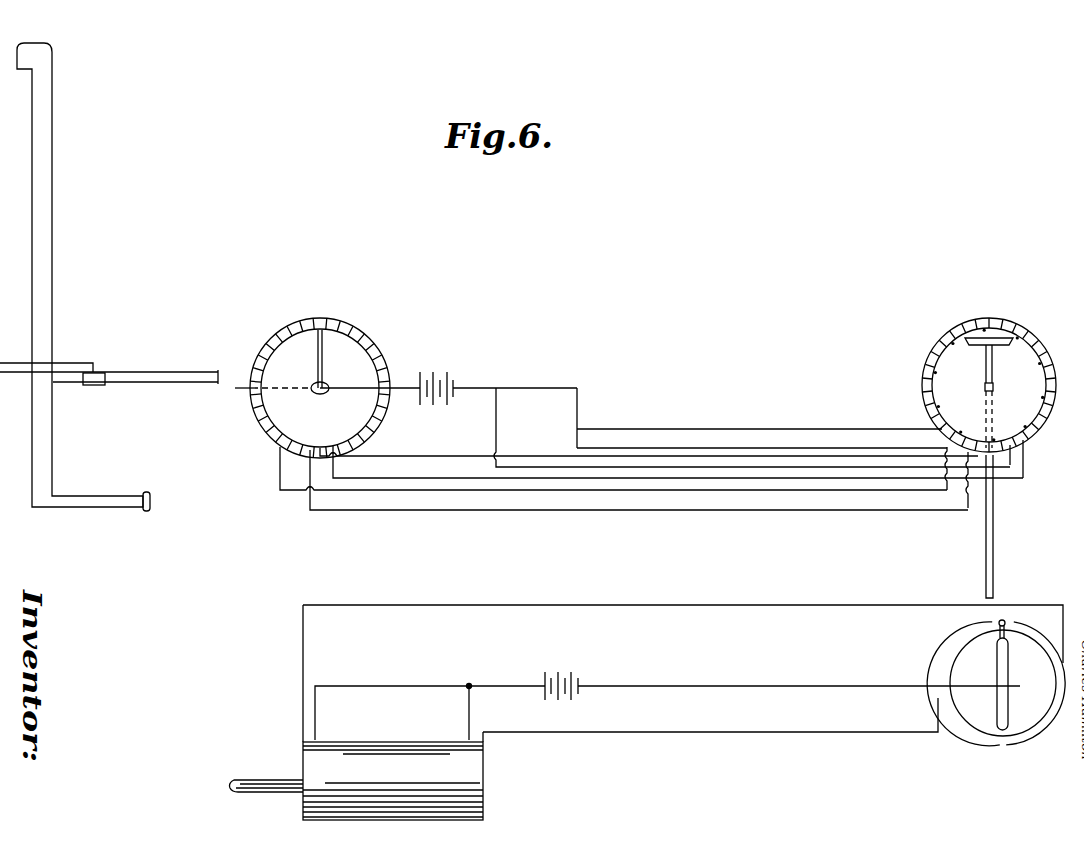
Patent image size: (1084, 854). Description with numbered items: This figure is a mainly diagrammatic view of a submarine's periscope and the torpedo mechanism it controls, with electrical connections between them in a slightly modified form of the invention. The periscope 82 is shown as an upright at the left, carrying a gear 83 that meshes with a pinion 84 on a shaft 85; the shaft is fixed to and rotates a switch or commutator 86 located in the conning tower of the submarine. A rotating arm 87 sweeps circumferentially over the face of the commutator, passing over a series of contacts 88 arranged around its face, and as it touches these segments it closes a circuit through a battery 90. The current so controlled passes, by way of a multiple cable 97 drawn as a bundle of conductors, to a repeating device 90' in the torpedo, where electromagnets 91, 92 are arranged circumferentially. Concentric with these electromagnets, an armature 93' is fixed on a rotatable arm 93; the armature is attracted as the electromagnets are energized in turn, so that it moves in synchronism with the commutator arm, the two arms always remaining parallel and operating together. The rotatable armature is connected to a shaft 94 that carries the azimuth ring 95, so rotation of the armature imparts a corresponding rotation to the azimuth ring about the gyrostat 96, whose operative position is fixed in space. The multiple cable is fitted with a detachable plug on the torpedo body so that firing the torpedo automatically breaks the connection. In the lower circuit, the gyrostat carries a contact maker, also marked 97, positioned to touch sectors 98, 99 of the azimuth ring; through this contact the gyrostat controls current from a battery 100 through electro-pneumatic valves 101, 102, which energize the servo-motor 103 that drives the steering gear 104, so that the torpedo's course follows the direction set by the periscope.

The periscope 82 is at (53, 213).
The gear 83 is at (72, 365).
The pinion 84 is at (97, 386).
The shaft 85 is at (177, 383).
The switch or commutator 86 is at (383, 330).
The rotating arm 87 is at (322, 360).
The contact 88 is at (278, 431).
The battery 90 is at (665, 410).
The repeating device 90' is at (999, 381).
The electromagnet 91 is at (958, 440).
The electromagnet 92 is at (943, 432).
The rotatable arm 93 is at (1010, 325).
The armature 93' is at (988, 311).
The shaft 94 is at (996, 533).
The azimuth ring 95 is at (1034, 637).
The gyrostat 96 is at (997, 702).
The multiple cable 97 is at (748, 423).
The sector 98 is at (970, 732).
The sector 99 is at (1043, 727).
The battery 100 is at (560, 680).
The electro-pneumatic valve 101 is at (315, 738).
The electro-pneumatic valve 102 is at (478, 737).
The servo-motor 103 is at (477, 772).
The steering gear 104 is at (275, 780).